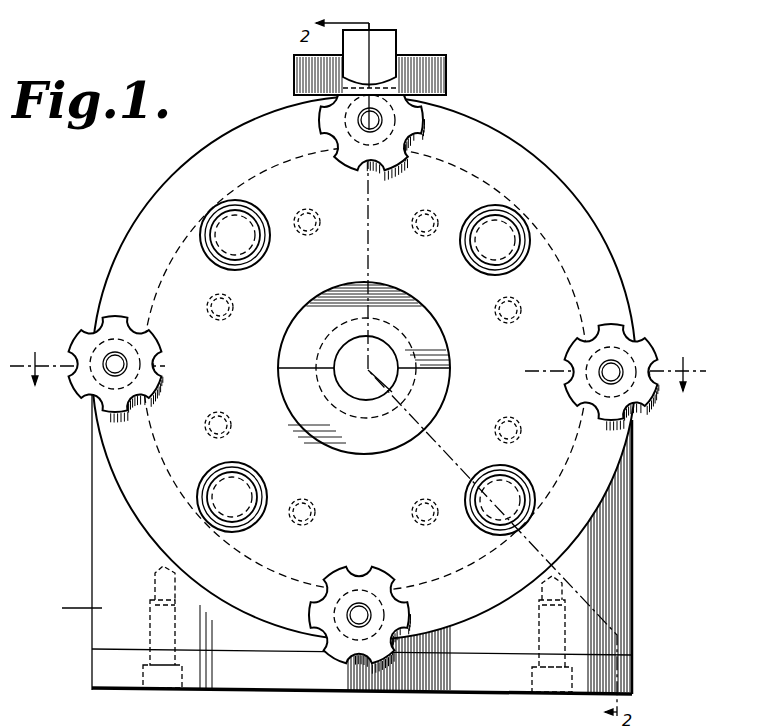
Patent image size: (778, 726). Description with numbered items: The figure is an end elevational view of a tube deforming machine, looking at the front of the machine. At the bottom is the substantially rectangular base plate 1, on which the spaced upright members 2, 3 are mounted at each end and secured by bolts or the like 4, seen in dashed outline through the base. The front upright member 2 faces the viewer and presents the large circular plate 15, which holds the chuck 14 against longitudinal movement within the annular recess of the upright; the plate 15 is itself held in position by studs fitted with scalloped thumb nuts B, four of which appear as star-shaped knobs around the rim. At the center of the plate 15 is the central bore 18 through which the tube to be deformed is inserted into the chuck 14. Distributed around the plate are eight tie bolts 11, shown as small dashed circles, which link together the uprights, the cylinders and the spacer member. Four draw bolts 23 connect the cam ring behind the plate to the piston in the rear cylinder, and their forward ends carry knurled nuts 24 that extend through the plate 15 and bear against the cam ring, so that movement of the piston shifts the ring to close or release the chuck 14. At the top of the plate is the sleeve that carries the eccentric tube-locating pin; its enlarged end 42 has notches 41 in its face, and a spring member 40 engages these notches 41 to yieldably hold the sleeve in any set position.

The base plate 1 is at (472, 690).
The front upright member 2 is at (73, 612).
The upright member 3 is at (366, 371).
The bolts 4 is at (165, 690).
The tie bolts 11 is at (497, 305).
The chuck 14 is at (310, 333).
The plate 15 is at (585, 478).
The central bore 18 is at (306, 416).
The draw bolts 23 is at (262, 247).
The knurled nuts 24 is at (242, 523).
The spring member 40 is at (386, 48).
The notches 41 is at (428, 77).
The enlarged end 42 is at (446, 59).
The scalloped thumb nuts B is at (120, 316).